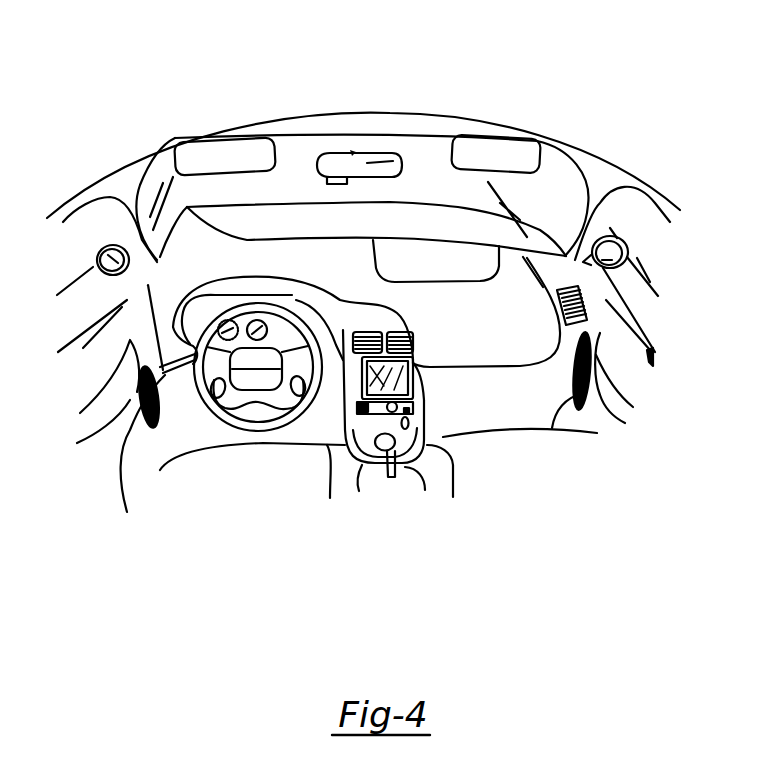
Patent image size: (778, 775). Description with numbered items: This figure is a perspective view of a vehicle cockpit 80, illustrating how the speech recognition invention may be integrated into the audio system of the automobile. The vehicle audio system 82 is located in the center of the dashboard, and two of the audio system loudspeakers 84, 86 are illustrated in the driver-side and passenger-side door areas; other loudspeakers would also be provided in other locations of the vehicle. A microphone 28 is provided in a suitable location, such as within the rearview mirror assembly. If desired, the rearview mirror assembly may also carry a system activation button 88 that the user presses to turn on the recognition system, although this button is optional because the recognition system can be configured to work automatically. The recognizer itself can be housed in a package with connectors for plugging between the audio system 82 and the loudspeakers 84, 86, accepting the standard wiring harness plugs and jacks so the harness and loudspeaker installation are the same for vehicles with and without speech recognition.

The vehicle cockpit 80 is at (295, 103).
The microphone 28 is at (347, 186).
The system activation button 88 is at (341, 163).
The loudspeaker 84 is at (127, 512).
The loudspeaker 86 is at (552, 428).
The vehicle audio system 82 is at (395, 477).